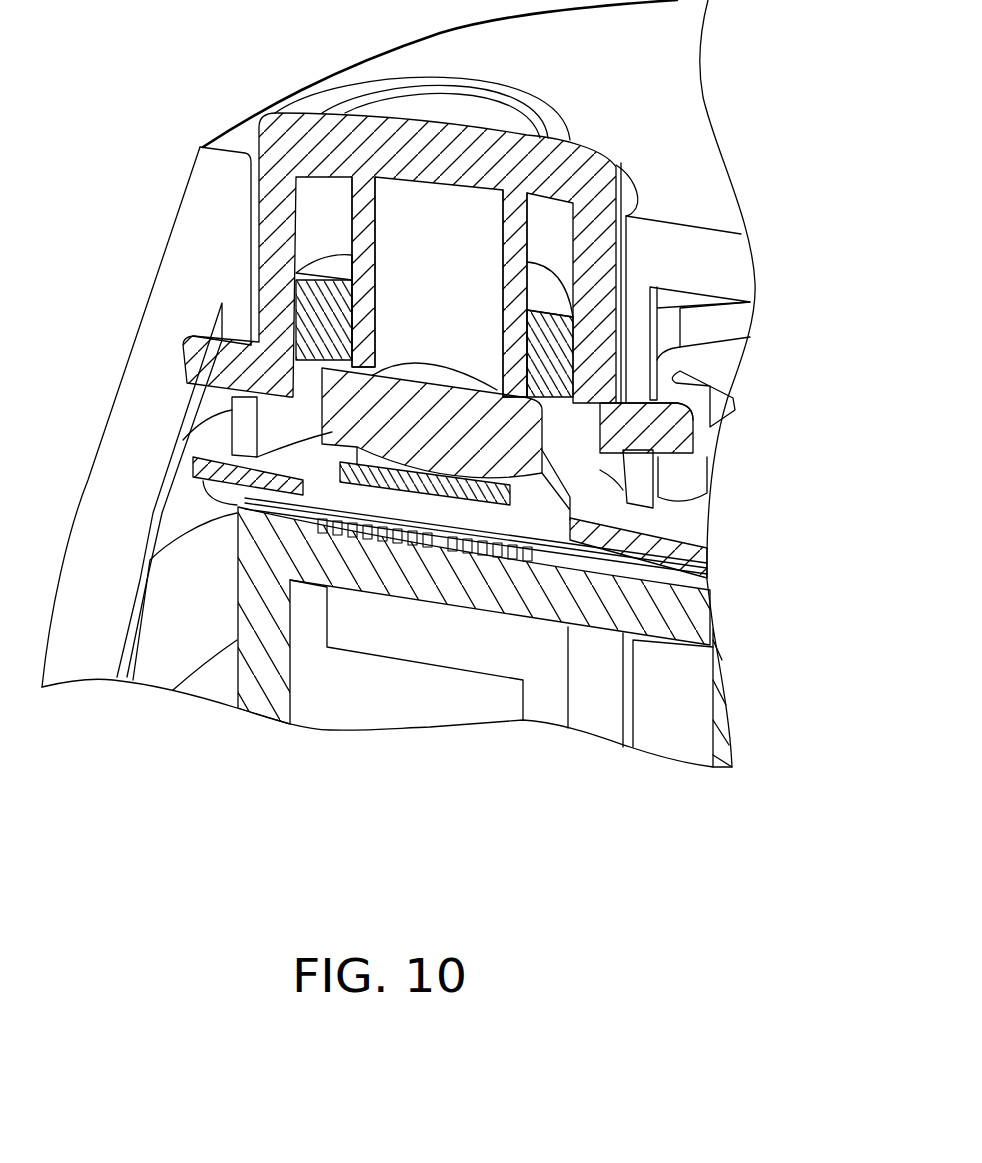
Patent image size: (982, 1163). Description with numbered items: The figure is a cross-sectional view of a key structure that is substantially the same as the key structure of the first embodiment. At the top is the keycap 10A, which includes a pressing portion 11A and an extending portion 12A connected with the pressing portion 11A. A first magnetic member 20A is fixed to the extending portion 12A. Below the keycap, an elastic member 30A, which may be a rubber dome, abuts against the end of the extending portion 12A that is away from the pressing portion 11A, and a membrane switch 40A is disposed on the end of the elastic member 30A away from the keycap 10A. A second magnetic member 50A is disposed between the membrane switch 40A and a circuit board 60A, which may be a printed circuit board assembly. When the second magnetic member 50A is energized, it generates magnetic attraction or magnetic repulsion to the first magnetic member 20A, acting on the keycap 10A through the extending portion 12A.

The keycap 10A is at (533, 240).
The pressing portion 11A is at (475, 110).
The extending portion 12A is at (513, 238).
The first magnetic member 20A is at (558, 367).
The elastic member 30A is at (510, 443).
The membrane switch 40A is at (529, 522).
The second magnetic member 50A is at (585, 520).
The circuit board 60A is at (618, 607).